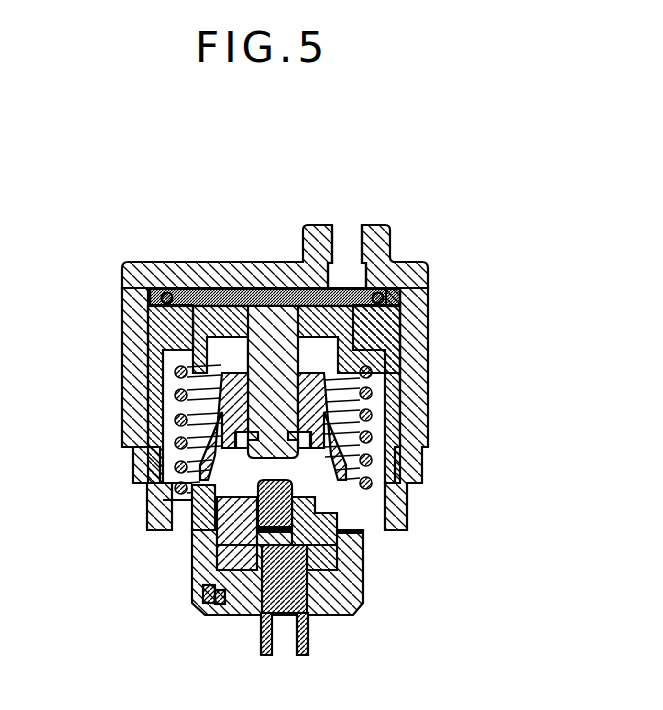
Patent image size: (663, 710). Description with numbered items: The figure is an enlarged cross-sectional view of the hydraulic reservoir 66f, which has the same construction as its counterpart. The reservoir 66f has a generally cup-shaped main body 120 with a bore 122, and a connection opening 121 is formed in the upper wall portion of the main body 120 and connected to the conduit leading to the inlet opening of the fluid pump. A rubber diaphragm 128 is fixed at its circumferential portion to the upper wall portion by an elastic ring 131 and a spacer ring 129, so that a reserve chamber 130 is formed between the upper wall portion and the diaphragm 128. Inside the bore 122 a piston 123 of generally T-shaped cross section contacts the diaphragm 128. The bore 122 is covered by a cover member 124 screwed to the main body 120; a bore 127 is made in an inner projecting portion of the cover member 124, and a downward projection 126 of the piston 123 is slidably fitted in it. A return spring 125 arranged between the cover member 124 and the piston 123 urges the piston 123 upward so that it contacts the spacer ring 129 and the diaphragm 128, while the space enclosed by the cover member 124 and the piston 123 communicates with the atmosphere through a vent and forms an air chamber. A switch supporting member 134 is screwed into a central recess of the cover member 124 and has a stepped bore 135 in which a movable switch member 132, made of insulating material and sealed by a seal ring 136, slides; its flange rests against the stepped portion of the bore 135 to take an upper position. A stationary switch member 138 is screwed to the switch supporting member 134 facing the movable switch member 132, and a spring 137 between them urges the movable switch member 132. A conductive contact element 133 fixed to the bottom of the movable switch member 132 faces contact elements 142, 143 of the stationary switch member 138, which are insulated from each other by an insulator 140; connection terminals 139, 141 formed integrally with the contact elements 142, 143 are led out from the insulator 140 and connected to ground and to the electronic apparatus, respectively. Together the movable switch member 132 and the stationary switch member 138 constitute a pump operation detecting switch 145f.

The reservoir 66f is at (449, 224).
The main body 120 is at (162, 273).
The connection opening 121 is at (345, 225).
The bore 122 is at (400, 350).
The piston 123 is at (213, 317).
The cover member 124 is at (152, 466).
The return spring 125 is at (208, 397).
The downward projection 126 is at (278, 404).
The bore 127 is at (298, 425).
The diaphragm 128 is at (268, 298).
The spacer ring 129 is at (160, 297).
The reserve chamber 130 is at (362, 290).
The elastic ring 131 is at (397, 295).
The movable switch member 132 is at (275, 500).
The contact element 133 is at (290, 522).
The switch supporting member 134 is at (192, 550).
The stepped bore 135 is at (178, 523).
The seal ring 136 is at (190, 536).
The spring 137 is at (292, 542).
The stationary switch member 138 is at (287, 620).
The connection terminal 139 is at (303, 630).
The insulator 140 is at (366, 602).
The connection terminal 141 is at (262, 632).
The contact element 142 is at (357, 563).
The contact element 143 is at (222, 599).
The pump operation detecting switch 145f is at (205, 588).